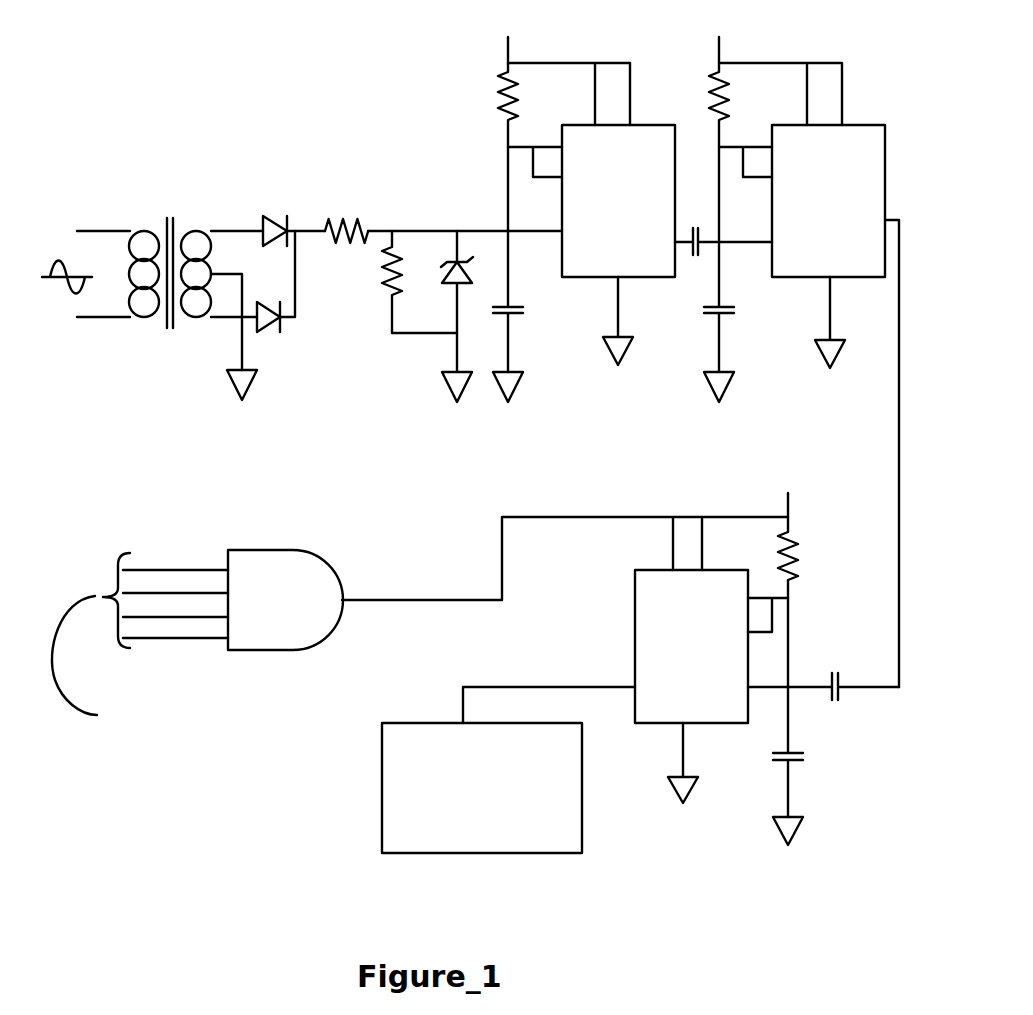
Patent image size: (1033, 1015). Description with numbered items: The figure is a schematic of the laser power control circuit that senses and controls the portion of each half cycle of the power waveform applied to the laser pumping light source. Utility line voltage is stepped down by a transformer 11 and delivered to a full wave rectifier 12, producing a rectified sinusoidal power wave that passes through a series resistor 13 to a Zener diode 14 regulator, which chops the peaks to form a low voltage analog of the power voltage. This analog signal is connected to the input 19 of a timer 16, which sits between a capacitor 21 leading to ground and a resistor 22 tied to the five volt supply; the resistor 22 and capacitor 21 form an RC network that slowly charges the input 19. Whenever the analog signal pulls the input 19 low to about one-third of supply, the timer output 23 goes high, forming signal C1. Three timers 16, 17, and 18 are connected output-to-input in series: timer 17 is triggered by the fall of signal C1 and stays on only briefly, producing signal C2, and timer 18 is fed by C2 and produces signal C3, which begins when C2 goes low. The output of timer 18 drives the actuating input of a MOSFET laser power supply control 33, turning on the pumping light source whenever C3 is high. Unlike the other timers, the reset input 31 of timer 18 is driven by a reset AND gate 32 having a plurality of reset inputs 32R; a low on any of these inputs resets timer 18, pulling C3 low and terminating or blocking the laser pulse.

The transformer 11 is at (147, 232).
The full wave rectifier 12 is at (268, 302).
The series resistor 13 is at (343, 222).
The zener diode 14 is at (457, 262).
The timer 16 is at (631, 228).
The timer 17 is at (841, 228).
The timer 18 is at (704, 677).
The input 19 is at (557, 230).
The capacitor 21 is at (518, 318).
The resistor 22 is at (500, 92).
The timer output 23 is at (692, 258).
The reset input 31 is at (672, 558).
The reset AND gate 32 is at (285, 563).
The reset inputs 32R is at (140, 641).
The MOSFET laser power supply control 33 is at (395, 818).
The signal C1 is at (712, 240).
The signal C2 is at (897, 427).
The signal C3 is at (542, 685).